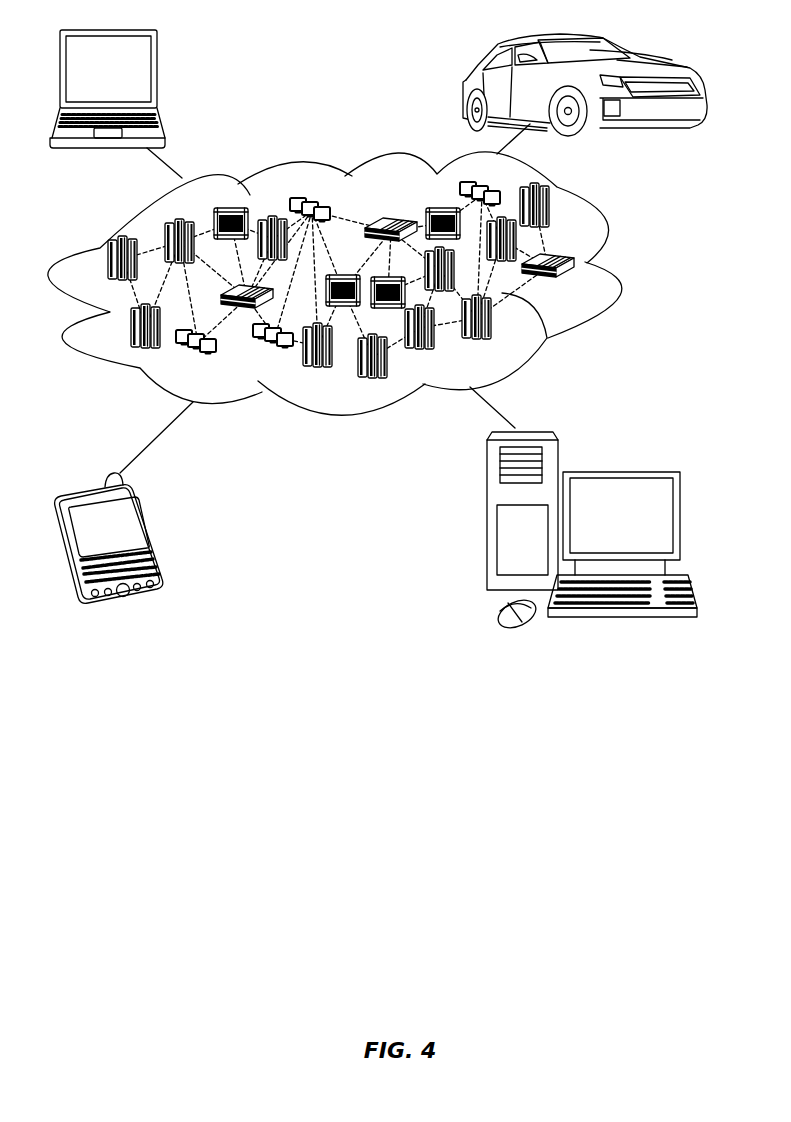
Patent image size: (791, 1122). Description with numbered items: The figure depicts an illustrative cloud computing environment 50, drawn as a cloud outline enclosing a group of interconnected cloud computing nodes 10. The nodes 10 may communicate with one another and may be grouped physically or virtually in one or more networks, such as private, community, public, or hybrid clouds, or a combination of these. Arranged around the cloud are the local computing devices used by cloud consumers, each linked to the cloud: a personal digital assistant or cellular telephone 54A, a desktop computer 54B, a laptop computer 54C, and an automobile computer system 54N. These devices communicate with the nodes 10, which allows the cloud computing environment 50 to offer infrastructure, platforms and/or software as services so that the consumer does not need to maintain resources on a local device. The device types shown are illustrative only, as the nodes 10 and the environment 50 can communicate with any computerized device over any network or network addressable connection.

The cloud computing node 10 is at (374, 280).
The cloud computing environment 50 is at (617, 263).
The personal digital assistant or cellular telephone 54A is at (150, 533).
The desktop computer 54B is at (620, 472).
The laptop computer 54C is at (157, 74).
The automobile computer system 54N is at (468, 88).